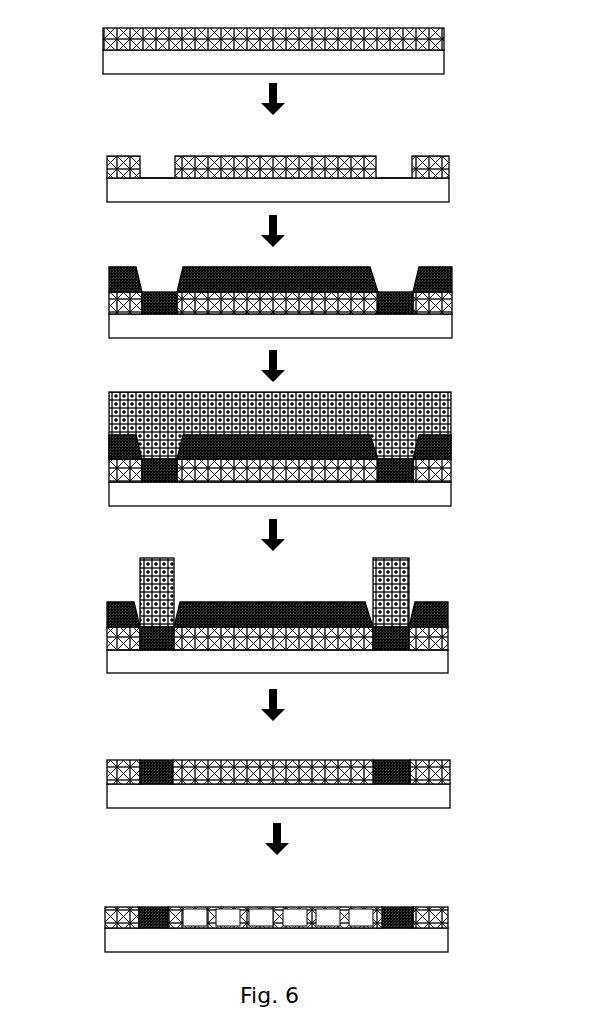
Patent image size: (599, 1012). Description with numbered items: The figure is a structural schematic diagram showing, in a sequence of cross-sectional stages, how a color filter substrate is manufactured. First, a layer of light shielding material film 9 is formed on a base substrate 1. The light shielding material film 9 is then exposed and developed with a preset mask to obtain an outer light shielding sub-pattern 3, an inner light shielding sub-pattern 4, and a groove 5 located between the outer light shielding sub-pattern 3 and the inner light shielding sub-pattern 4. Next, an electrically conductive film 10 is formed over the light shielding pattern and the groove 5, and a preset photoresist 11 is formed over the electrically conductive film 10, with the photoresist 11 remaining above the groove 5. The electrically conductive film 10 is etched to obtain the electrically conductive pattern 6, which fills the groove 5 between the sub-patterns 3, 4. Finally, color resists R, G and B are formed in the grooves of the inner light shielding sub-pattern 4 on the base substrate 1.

The base substrate 1 is at (103, 65).
The outer light shielding sub-pattern 3 is at (107, 163).
The inner light shielding sub-pattern 4 is at (281, 166).
The groove 5 is at (155, 168).
The electrically conductive pattern 6 is at (160, 763).
The layer of light shielding material film 9 is at (103, 38).
The electrically conductive film 10 is at (109, 277).
The preset photoresist 11 is at (109, 400).